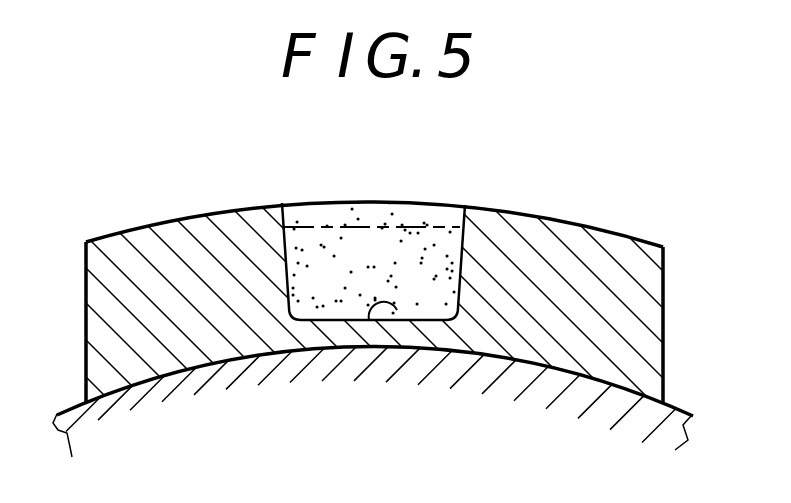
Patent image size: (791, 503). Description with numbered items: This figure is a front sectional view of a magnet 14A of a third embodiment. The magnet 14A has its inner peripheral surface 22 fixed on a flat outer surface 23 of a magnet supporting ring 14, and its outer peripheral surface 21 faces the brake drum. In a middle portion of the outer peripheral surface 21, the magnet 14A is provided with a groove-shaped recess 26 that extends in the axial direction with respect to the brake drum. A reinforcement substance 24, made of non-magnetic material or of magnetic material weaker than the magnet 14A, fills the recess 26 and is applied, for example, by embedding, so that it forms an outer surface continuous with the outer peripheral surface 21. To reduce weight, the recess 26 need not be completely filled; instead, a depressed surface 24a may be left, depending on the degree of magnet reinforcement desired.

The magnet supporting ring 14 is at (677, 410).
The magnet 14A is at (110, 228).
The outer peripheral surface 21 is at (240, 205).
The inner peripheral surface 22 is at (242, 362).
The flat outer surface 23 is at (63, 405).
The reinforcement substance 24 is at (382, 262).
The depressed surface 24a is at (446, 230).
The groove-shaped recess 26 is at (397, 310).